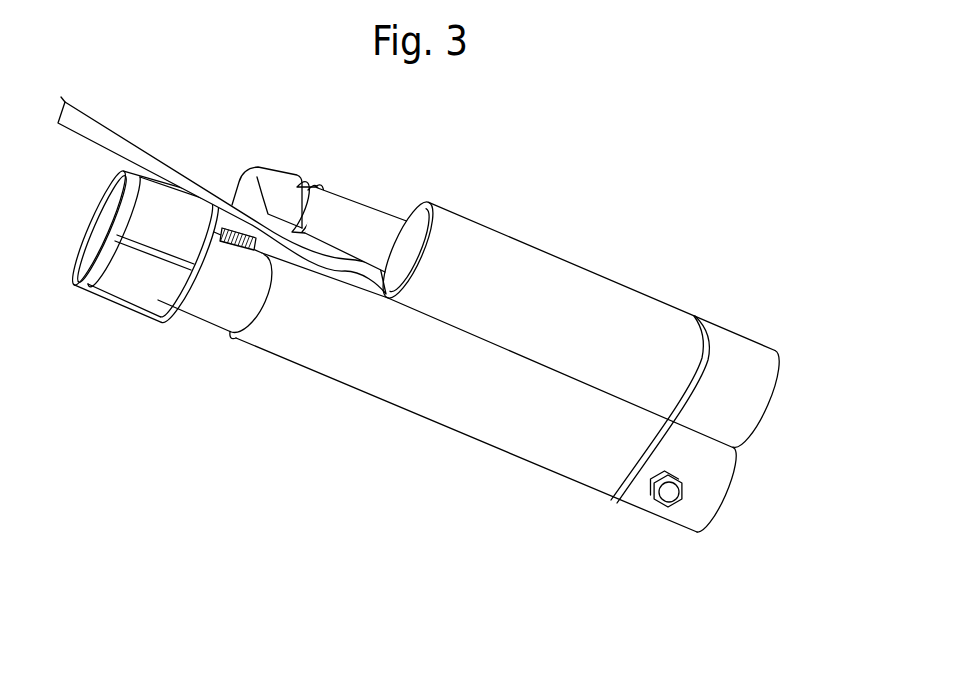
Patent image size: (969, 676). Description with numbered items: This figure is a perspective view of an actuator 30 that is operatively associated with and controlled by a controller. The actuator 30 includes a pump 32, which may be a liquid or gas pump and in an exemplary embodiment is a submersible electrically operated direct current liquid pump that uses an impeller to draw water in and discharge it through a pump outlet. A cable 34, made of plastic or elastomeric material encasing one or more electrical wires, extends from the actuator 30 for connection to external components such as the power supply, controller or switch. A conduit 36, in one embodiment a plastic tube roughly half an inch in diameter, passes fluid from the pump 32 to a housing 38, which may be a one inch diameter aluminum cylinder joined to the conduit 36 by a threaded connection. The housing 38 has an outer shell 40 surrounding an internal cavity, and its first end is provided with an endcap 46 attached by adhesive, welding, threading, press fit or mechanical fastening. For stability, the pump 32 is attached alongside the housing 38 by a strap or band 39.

The actuator 30 is at (417, 309).
The pump 32 is at (628, 297).
The cable 34 is at (111, 139).
The conduit 36 is at (282, 182).
The housing 38 is at (447, 382).
The strap or band 39 is at (688, 382).
The outer shell 40 is at (478, 417).
The endcap 46 is at (113, 302).